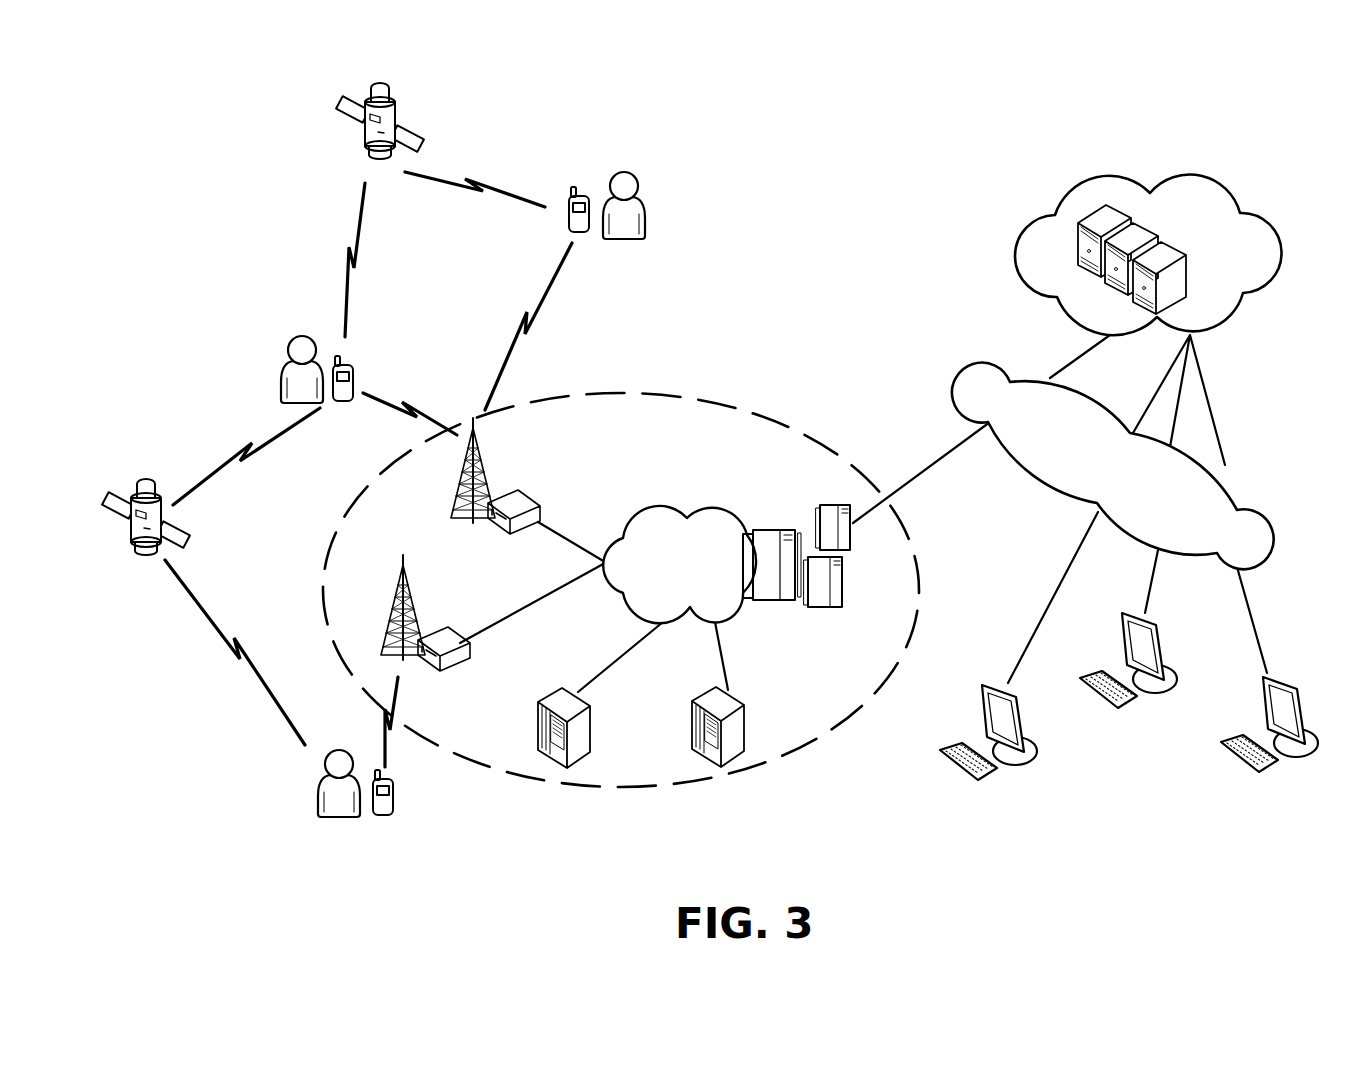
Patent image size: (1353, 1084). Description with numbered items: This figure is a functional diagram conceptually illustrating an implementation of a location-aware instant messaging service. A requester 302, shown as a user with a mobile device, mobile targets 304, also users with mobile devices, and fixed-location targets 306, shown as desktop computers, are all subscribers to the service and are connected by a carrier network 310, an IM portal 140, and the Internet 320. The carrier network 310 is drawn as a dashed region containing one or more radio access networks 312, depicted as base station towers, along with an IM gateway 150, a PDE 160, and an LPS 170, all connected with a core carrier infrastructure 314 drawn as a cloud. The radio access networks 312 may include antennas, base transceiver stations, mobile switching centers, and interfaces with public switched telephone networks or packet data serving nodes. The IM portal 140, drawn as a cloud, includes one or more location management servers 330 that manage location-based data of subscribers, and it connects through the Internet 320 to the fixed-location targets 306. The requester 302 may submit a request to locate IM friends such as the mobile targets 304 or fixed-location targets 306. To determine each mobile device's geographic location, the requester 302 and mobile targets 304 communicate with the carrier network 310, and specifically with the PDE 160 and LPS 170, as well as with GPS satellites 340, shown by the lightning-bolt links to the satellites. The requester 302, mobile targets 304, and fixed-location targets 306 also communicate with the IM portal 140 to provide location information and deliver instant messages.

The IM portal 140 is at (1148, 237).
The IM gateway 150 is at (797, 503).
The PDE 160 is at (541, 704).
The LPS 170 is at (708, 695).
The requester 302 is at (318, 782).
The mobile targets 304 is at (553, 223).
The fixed-location targets 306 is at (1230, 778).
The carrier network 310 is at (740, 401).
The radio access networks 312 is at (463, 486).
The core carrier infrastructure 314 is at (643, 519).
The Internet 320 is at (953, 373).
The location management servers 330 is at (1149, 222).
The global positioning system (GPS) satellites 340 is at (401, 107).